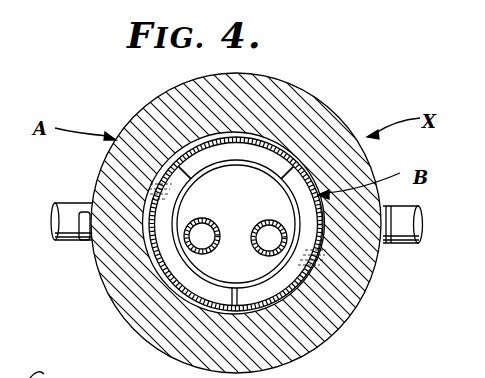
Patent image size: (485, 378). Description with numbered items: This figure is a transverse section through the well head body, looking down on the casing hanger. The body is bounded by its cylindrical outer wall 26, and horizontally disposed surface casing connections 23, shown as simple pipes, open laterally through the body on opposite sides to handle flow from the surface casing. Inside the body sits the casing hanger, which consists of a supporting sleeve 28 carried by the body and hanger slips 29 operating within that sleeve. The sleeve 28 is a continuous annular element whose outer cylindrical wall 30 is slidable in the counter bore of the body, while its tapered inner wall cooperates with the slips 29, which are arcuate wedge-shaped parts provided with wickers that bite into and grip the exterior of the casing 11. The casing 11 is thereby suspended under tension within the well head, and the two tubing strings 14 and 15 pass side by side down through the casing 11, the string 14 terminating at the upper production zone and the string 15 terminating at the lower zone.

The casing 11 is at (157, 200).
The tubing string 14 is at (200, 218).
The tubing string 15 is at (268, 220).
The surface casing connection 23 is at (58, 224).
The cylindrical outer wall 26 is at (295, 356).
The supporting sleeve 28 is at (303, 266).
The hanger slips 29 is at (261, 150).
The outer cylindrical wall 30 is at (323, 232).